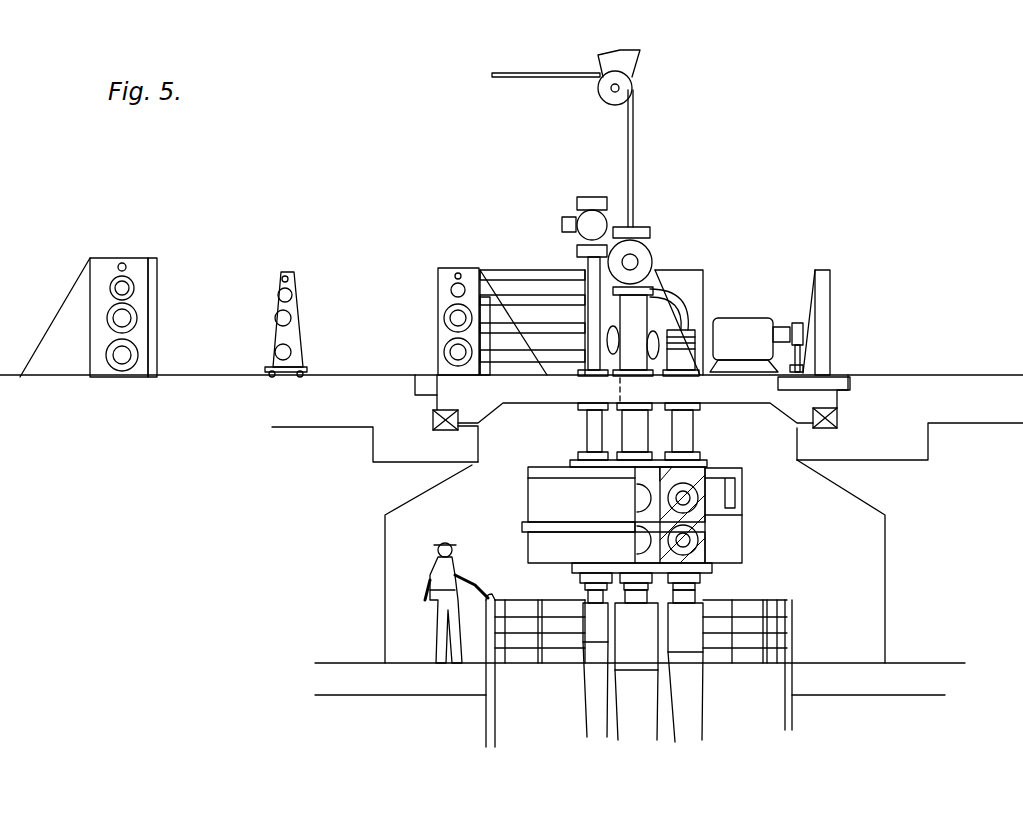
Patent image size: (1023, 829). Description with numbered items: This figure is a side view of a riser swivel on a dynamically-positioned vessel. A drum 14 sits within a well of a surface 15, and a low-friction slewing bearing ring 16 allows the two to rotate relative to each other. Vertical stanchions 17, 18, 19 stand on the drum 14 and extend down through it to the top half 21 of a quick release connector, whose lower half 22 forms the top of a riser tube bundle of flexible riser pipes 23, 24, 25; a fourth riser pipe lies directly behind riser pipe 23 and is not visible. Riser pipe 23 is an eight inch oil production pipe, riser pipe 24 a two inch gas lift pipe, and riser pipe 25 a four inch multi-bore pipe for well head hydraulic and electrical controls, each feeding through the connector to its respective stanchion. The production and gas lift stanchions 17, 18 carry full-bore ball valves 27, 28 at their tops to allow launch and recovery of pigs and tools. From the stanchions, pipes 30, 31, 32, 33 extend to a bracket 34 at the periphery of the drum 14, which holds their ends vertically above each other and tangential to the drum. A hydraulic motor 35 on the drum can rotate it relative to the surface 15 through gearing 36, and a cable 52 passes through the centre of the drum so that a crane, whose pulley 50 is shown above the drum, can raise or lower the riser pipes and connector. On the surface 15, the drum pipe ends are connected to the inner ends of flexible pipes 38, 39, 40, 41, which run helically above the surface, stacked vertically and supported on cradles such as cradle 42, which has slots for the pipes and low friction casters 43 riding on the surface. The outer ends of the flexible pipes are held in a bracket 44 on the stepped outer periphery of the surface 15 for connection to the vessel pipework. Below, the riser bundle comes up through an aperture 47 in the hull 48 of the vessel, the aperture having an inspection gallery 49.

The drum 14 is at (768, 403).
The surface 15 is at (366, 374).
The slewing bearing ring 16 is at (822, 428).
The stanchion 17 is at (640, 435).
The stanchion 18 is at (588, 430).
The stanchion 19 is at (688, 440).
The top half of quick release connector 21 is at (545, 498).
The lower half of quick release connector 22 is at (545, 548).
The riser pipe 23 is at (648, 686).
The riser pipe 24 is at (590, 686).
The riser pipe 25 is at (690, 715).
The full-bore ball valve 27 is at (652, 256).
The full-bore ball valve 28 is at (585, 228).
The drum pipe 30 is at (560, 352).
The drum pipe 31 is at (535, 318).
The drum pipe 32 is at (515, 285).
The drum pipe 33 is at (547, 278).
The bracket 34 is at (438, 284).
The hydraulic motor 35 is at (745, 322).
The gearing 36 is at (805, 377).
The flexible pipe 38 is at (276, 352).
The flexible pipe 39 is at (275, 318).
The flexible pipe 40 is at (278, 292).
The flexible pipe 41 is at (282, 277).
The cradle 42 is at (295, 336).
The casters 43 is at (302, 374).
The bracket 44 is at (100, 288).
The aperture 47 is at (510, 717).
The hull 48 is at (862, 733).
The inspection gallery 49 is at (385, 612).
The pulley 50 is at (630, 82).
The cable 52 is at (527, 78).